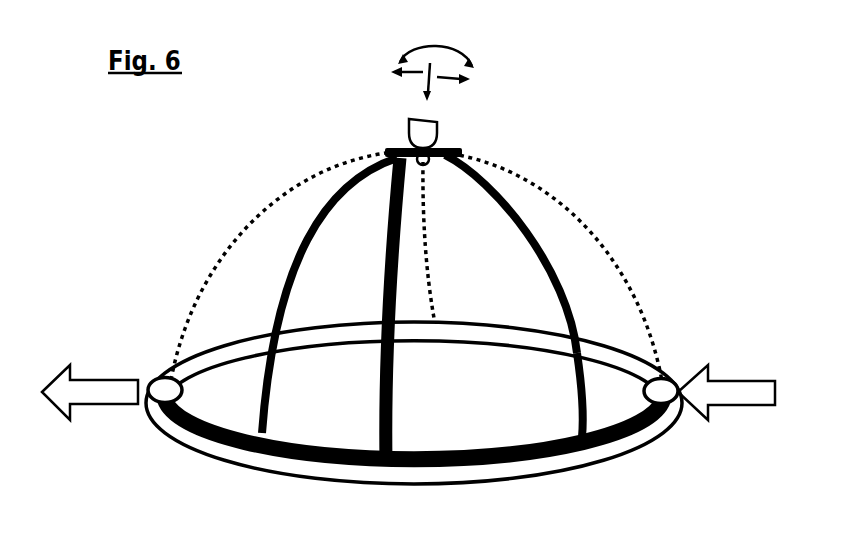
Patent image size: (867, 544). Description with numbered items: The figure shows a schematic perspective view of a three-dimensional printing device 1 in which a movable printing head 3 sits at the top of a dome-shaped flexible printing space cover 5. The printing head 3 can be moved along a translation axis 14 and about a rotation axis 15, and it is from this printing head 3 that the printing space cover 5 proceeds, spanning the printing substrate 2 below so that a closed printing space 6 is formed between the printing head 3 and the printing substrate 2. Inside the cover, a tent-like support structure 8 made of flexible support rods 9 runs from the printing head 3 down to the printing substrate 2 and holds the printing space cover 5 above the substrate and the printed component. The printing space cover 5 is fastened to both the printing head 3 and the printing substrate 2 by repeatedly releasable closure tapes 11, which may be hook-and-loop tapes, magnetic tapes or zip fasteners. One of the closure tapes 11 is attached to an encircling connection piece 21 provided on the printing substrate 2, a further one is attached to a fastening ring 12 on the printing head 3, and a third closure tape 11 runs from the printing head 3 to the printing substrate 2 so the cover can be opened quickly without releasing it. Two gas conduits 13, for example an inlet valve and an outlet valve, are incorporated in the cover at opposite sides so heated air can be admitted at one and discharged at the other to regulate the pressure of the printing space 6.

The 3D printing device 1 is at (681, 130).
The printing substrate 2 is at (611, 500).
The printing head 3 is at (415, 135).
The printing space cover 5 is at (598, 241).
The printing space 6 is at (254, 258).
The support structure 8 is at (503, 196).
The support rods 9 is at (573, 381).
The closure tapes 11 is at (385, 153).
The fastening ring 12 is at (468, 146).
The gas conduits 13 is at (153, 380).
The translation axis 14 is at (431, 99).
The rotation axis 15 is at (445, 43).
The encircling connection piece 21 is at (440, 483).